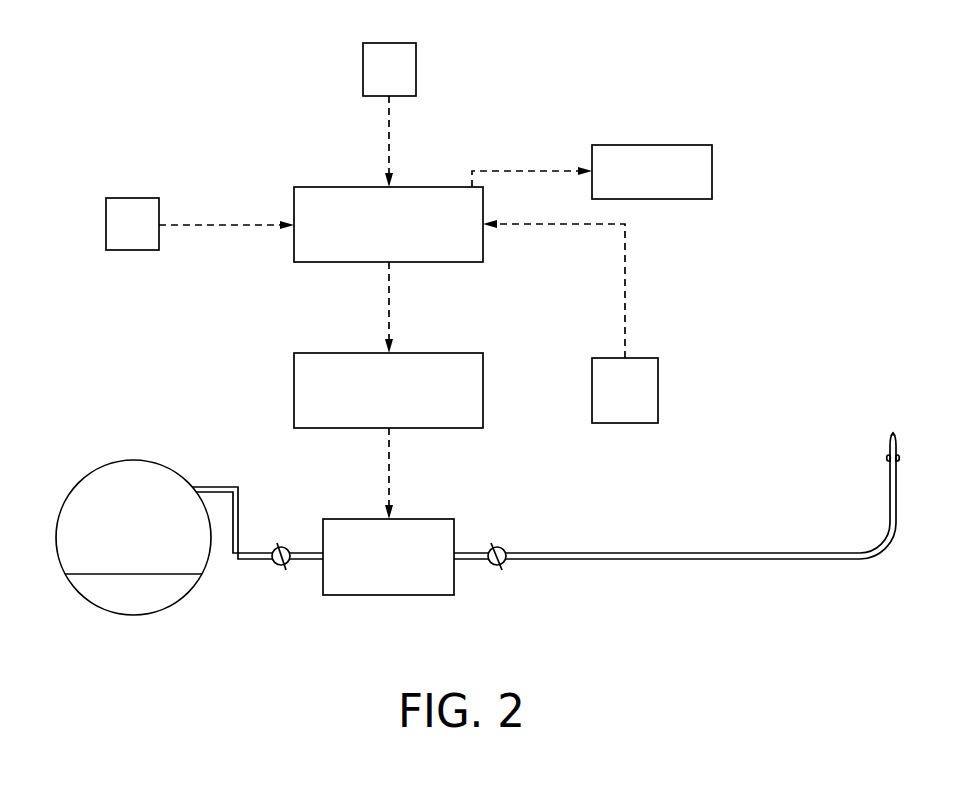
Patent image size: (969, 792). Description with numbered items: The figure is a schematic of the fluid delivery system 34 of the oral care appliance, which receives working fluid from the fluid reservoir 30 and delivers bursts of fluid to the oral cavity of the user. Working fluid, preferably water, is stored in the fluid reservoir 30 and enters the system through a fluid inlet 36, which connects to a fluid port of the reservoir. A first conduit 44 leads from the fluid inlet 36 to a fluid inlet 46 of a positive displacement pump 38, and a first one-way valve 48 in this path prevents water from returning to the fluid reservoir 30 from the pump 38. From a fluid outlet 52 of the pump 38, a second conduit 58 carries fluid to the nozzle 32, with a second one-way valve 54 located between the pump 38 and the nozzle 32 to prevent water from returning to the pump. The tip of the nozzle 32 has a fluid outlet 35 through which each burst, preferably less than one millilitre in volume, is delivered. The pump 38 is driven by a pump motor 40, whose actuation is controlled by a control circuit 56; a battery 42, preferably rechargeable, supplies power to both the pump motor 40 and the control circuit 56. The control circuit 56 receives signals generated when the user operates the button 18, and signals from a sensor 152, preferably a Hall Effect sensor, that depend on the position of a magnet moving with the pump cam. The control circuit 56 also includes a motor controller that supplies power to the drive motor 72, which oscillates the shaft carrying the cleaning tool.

The button 18 is at (388, 42).
The control circuit 56 is at (342, 187).
The drive motor 72 is at (642, 145).
The sensor 152 is at (132, 198).
The pump motor 40 is at (343, 352).
The battery 42 is at (658, 392).
The positive displacement pump 38 is at (400, 595).
The fluid reservoir 30 is at (97, 499).
The fluid inlet 36 is at (191, 485).
The first conduit 44 is at (242, 503).
The first one-way valve 48 is at (272, 563).
The fluid inlet of the pump 46 is at (322, 568).
The fluid outlet of the pump 52 is at (454, 562).
The second one-way valve 54 is at (492, 543).
The second conduit 58 is at (670, 553).
The nozzle 32 is at (887, 447).
The fluid outlet 35 is at (892, 432).
The fluid delivery system 34 is at (570, 596).